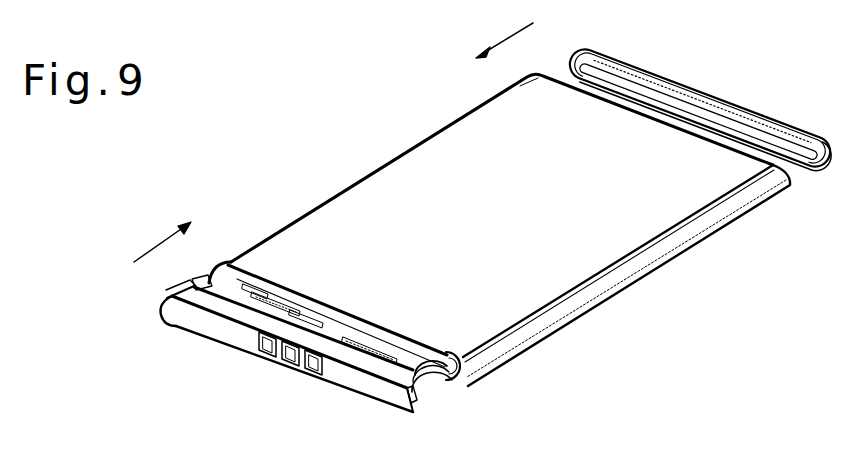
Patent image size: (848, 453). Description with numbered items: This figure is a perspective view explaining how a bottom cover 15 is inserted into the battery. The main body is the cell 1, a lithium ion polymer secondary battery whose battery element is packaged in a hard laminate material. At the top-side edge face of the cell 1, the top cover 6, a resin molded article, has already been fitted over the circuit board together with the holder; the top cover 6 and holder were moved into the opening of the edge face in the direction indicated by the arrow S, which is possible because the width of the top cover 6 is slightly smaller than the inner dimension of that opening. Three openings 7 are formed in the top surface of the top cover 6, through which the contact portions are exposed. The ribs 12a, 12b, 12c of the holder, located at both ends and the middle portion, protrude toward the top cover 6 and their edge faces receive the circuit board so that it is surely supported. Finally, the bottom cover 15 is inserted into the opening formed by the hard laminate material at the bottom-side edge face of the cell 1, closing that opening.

The cell 1 is at (585, 262).
The bottom cover 15 is at (750, 112).
The top cover 6 is at (352, 380).
The openings 7 is at (311, 373).
The rib 12a is at (205, 278).
The rib 12b is at (293, 318).
The rib 12c is at (438, 393).
The direction of movement S is at (162, 249).